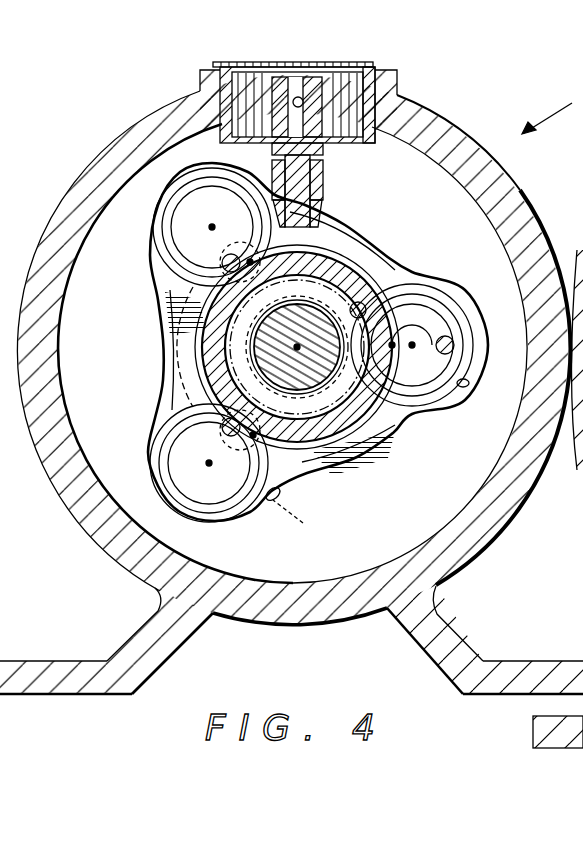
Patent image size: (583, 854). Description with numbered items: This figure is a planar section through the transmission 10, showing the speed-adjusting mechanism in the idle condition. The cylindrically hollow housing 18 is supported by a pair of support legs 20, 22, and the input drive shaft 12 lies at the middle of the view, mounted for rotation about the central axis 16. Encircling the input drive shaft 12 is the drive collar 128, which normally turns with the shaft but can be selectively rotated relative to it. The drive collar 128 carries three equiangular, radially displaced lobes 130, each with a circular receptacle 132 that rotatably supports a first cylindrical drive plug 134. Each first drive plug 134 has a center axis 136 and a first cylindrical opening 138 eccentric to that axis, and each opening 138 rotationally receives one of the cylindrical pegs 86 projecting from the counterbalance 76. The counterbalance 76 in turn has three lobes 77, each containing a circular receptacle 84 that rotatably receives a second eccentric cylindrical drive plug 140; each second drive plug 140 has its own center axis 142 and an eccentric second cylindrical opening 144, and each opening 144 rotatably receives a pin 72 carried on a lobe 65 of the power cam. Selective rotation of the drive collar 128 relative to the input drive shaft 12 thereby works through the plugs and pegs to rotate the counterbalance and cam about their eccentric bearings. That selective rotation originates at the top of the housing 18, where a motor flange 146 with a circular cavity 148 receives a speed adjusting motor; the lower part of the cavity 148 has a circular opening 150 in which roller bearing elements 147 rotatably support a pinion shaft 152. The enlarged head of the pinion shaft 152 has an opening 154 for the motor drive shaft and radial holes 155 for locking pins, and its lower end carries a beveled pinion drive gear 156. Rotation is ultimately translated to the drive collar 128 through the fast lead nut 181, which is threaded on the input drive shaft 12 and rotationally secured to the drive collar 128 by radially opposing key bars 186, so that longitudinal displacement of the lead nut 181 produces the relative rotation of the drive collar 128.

The transmission 10 is at (548, 111).
The input drive shaft 12 is at (340, 277).
The central axis 16 is at (298, 343).
The housing 18 is at (457, 130).
The support leg 20 is at (163, 647).
The support leg 22 is at (437, 657).
The lobe 65 is at (260, 187).
The pin 72 is at (477, 388).
The counterbalance 76 is at (358, 237).
The lobe 77 is at (153, 223).
The receptacle 84 is at (167, 247).
The peg 86 is at (225, 271).
The drive collar 128 is at (340, 457).
The lobe 130 is at (167, 283).
The receptacle 132 is at (163, 410).
The first cylindrical drive plug 134 is at (210, 185).
The center axis 136 is at (190, 326).
The first cylindrical opening 138 is at (222, 200).
The second eccentric cylindrical drive plug 140 is at (167, 193).
The center axis 142 is at (210, 227).
The second cylindrical opening 144 is at (460, 333).
The motor flange 146 is at (375, 63).
The roller bearing elements 147 is at (333, 155).
The circular cavity 148 is at (376, 81).
The circular opening 150 is at (327, 163).
The pinion shaft 152 is at (317, 110).
The opening 154 is at (302, 76).
The radial holes 155 is at (284, 106).
The beveled pinion drive gear 156 is at (323, 220).
The fast lead nut 181 is at (208, 350).
The key bars 186 is at (210, 338).